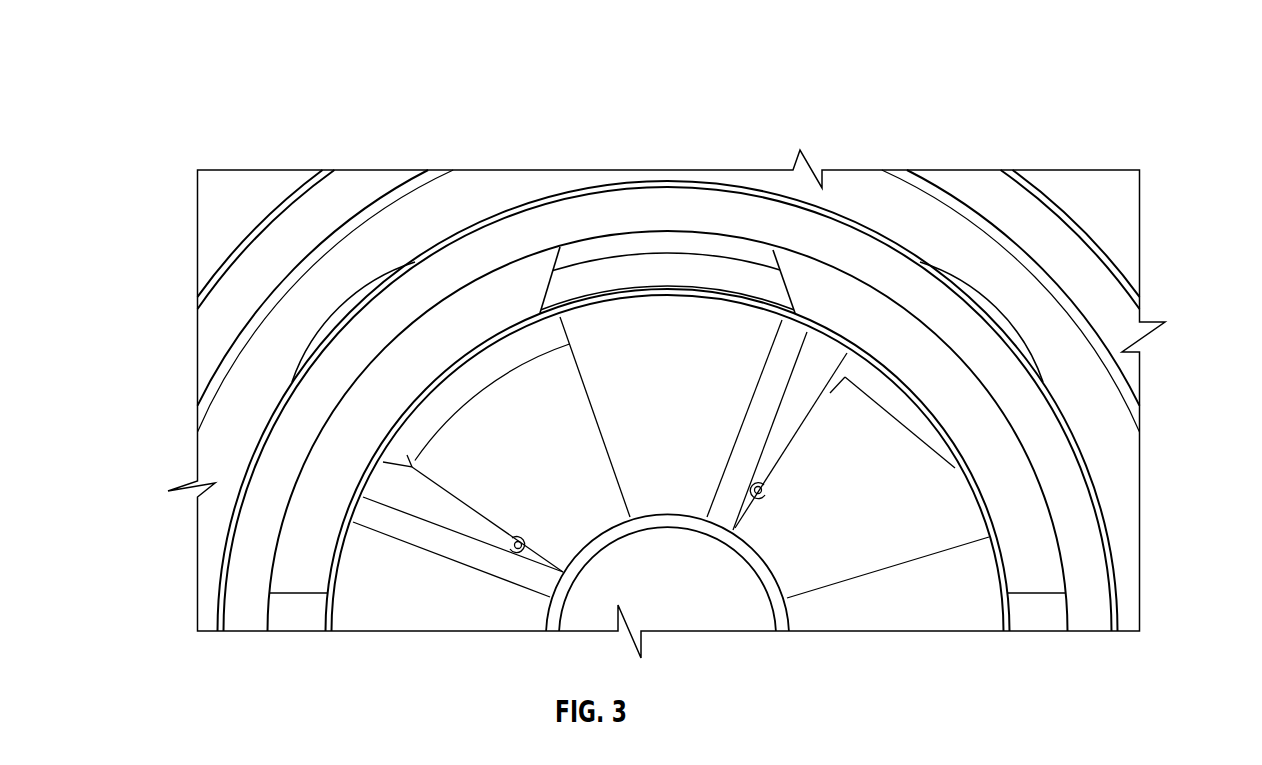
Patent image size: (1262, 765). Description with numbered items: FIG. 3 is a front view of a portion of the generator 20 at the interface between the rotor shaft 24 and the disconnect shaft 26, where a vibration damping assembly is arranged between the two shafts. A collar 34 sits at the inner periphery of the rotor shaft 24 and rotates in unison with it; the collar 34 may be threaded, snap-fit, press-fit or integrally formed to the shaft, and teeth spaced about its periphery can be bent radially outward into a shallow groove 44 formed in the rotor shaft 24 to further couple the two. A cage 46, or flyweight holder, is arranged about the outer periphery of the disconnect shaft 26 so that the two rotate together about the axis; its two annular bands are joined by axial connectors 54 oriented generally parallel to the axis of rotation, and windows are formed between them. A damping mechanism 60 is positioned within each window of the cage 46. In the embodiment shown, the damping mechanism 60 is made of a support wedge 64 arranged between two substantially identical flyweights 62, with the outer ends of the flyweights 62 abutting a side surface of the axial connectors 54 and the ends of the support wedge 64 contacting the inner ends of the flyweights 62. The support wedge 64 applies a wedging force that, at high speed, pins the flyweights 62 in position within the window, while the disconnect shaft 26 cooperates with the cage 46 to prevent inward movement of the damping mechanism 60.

The generator 20 is at (198, 99).
The rotor shaft 24 is at (425, 203).
The disconnect shaft 26 is at (861, 610).
The collar 34 is at (666, 222).
The groove 44 is at (993, 322).
The cage 46 is at (737, 243).
The axial connector 54 is at (292, 612).
The damping mechanism 60 is at (546, 244).
The flyweight 62 is at (417, 360).
The support wedge 64 is at (640, 270).